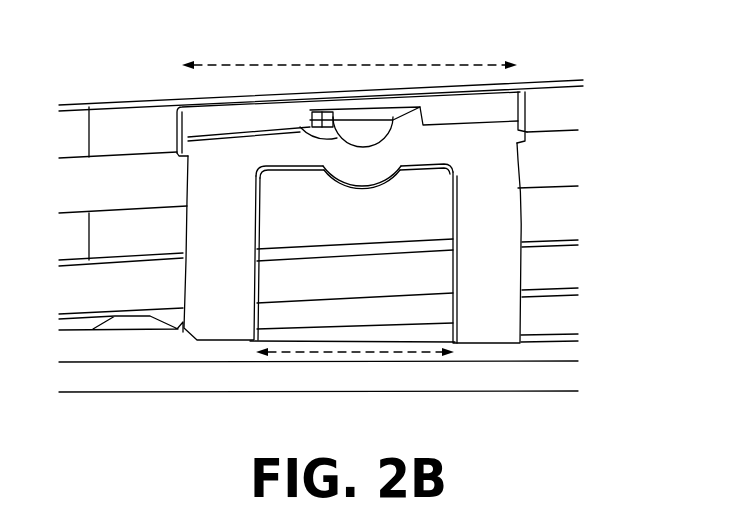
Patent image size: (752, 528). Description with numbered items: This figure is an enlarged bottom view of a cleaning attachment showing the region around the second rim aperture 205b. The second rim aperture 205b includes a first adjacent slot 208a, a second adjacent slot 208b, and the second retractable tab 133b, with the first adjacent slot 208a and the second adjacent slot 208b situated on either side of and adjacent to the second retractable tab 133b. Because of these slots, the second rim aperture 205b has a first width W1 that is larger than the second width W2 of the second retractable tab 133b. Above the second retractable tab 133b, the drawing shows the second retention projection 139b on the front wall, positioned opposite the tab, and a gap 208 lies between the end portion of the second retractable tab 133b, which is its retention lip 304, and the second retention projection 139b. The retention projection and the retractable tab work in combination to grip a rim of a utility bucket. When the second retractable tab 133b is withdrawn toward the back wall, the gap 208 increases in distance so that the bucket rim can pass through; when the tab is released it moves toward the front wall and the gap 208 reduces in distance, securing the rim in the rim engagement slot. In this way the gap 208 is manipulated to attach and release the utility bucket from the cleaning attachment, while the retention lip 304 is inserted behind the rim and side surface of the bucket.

The second retractable tab 133b is at (253, 312).
The second retention projection 139b is at (299, 123).
The gap 208 is at (358, 175).
The retention lip 304 is at (259, 171).
The first adjacent slot 208a is at (218, 333).
The second adjacent slot 208b is at (484, 332).
The second rim aperture 205b is at (514, 131).
The first width W1 is at (294, 64).
The second width W2 is at (335, 353).